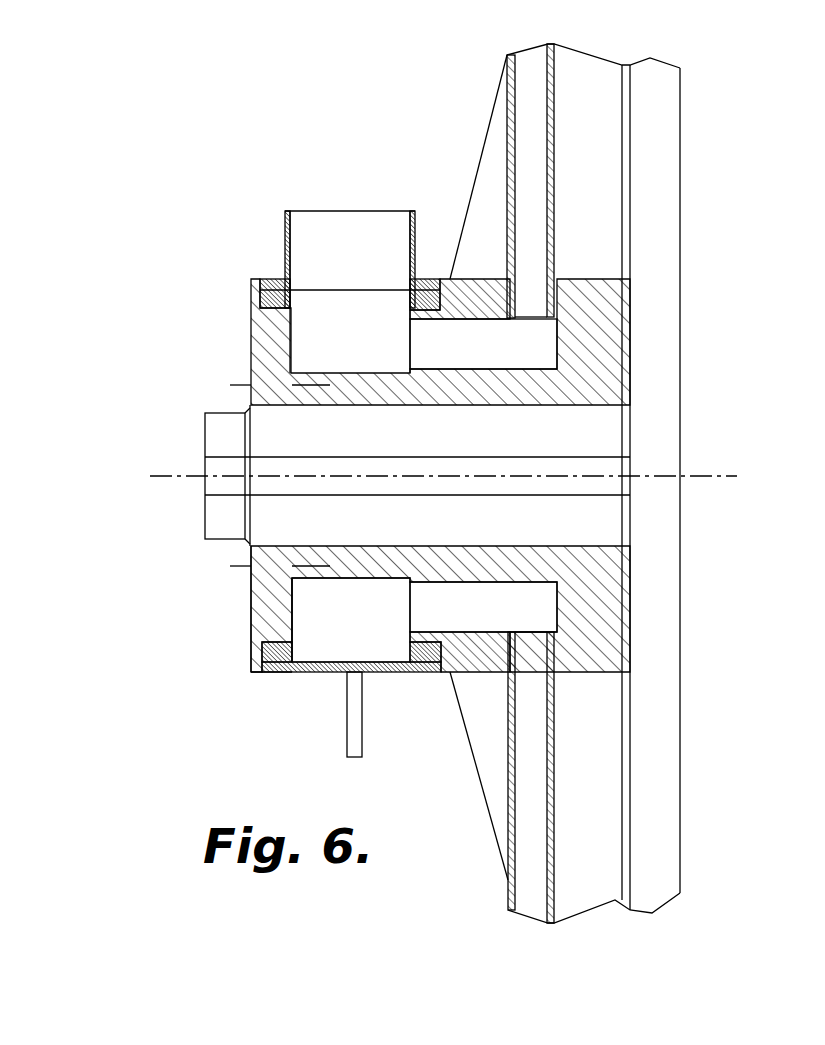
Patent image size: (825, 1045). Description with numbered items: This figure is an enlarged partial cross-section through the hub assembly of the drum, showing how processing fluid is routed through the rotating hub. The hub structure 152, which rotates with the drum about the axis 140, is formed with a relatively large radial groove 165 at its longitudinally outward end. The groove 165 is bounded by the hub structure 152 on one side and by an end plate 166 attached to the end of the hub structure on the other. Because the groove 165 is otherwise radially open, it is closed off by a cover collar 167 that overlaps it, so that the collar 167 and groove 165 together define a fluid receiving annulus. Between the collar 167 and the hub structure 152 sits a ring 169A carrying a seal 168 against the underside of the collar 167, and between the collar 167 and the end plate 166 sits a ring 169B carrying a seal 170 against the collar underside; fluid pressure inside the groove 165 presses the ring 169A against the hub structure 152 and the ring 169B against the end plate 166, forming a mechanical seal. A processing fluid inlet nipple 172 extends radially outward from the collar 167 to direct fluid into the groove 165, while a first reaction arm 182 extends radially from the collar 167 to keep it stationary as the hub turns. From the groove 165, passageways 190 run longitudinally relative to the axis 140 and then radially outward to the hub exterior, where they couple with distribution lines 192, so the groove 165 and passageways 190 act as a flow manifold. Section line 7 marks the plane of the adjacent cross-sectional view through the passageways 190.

The section line 7- 7 is at (492, 108).
The axis 140 is at (192, 474).
The hub structure 152 is at (483, 672).
The groove 165 is at (303, 607).
The end plate 166 is at (263, 628).
The cover collar 167 is at (308, 672).
The seal 168 is at (423, 673).
The ring 169A is at (425, 662).
The ring 169B is at (272, 652).
The seal 170 is at (268, 670).
The processing fluid inlet nipple 172 is at (288, 240).
The first reaction arm 182 is at (347, 735).
The passageways 190 is at (493, 340).
The distribution lines 192 is at (510, 173).